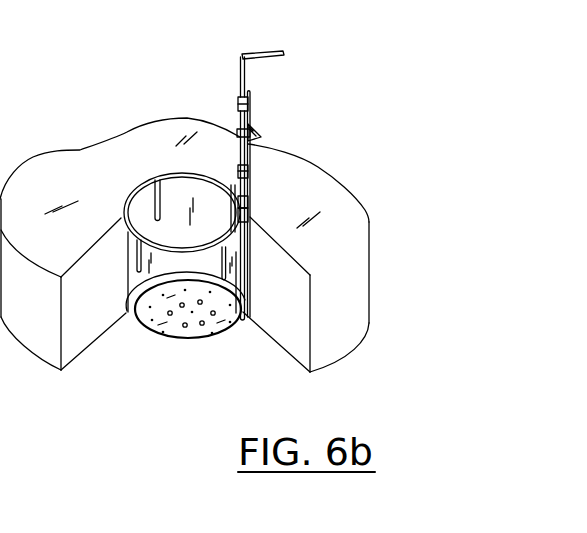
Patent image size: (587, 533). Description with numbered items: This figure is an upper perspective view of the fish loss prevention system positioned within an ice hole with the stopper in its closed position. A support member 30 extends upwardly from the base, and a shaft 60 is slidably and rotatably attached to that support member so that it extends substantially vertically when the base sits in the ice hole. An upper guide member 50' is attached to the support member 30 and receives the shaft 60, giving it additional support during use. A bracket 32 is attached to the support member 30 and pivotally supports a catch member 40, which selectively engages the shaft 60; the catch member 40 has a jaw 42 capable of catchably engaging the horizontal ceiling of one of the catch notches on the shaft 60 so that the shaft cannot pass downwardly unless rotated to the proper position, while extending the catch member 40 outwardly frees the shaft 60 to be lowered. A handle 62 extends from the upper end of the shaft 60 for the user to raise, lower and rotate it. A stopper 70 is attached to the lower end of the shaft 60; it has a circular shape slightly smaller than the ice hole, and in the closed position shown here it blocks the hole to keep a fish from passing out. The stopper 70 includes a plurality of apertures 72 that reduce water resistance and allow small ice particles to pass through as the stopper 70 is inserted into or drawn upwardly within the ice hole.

The support member 30 is at (253, 95).
The bracket 32 is at (248, 138).
The catch member 40 is at (253, 133).
The jaw 42 is at (240, 130).
The upper guide member 50' is at (157, 83).
The shaft 60 is at (238, 67).
The handle 62 is at (257, 55).
The stopper 70 is at (176, 338).
The apertures 72 is at (202, 326).